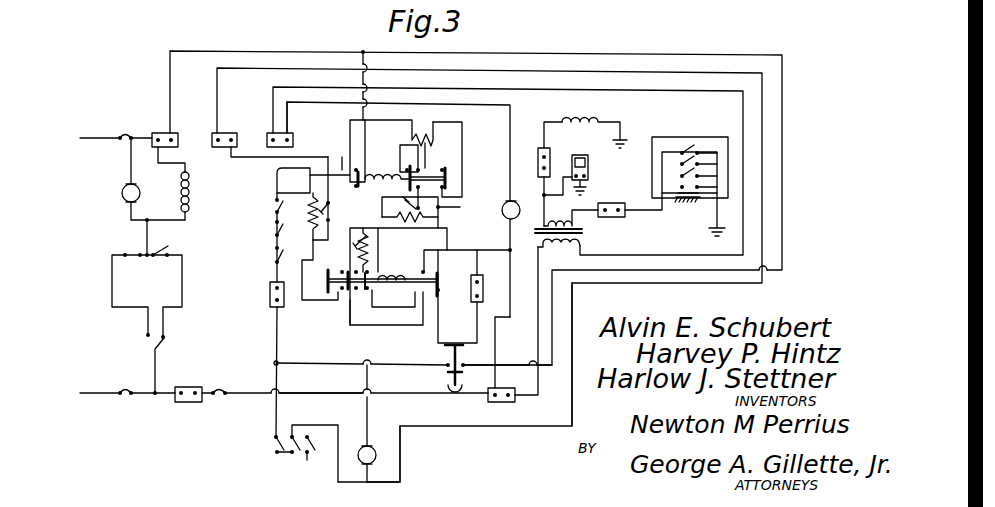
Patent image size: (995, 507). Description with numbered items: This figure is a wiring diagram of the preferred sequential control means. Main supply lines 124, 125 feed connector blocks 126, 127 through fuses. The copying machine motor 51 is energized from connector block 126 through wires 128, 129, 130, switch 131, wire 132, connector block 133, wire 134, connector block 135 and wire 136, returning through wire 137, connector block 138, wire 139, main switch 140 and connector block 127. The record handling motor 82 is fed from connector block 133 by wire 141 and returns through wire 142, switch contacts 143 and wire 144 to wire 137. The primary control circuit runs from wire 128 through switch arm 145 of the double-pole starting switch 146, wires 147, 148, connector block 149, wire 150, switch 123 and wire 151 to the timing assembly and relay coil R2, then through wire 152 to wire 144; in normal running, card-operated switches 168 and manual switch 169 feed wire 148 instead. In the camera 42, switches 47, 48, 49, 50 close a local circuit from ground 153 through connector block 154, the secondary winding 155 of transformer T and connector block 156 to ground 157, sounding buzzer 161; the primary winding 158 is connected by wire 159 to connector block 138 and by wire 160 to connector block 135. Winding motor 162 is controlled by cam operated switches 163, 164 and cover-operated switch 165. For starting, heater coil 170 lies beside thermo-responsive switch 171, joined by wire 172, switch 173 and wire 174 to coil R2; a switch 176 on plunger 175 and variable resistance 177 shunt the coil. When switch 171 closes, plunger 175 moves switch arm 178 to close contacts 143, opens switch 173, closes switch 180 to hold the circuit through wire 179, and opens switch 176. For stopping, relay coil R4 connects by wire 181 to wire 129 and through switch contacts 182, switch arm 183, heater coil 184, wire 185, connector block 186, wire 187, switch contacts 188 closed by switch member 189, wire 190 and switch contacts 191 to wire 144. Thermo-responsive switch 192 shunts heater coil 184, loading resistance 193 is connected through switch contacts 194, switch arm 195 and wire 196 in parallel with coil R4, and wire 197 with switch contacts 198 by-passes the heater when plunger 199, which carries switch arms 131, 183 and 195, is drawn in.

The camera 42 is at (712, 137).
The normally open switch 47 is at (684, 202).
The normally open switch 48 is at (680, 173).
The normally open switch 49 is at (680, 162).
The normally open switch 50 is at (680, 150).
The copying machine motor 51 is at (555, 228).
The motor of the record handling means 82 is at (372, 448).
The switch 123 is at (272, 210).
The main supply line 124 is at (96, 132).
The main supply line 125 is at (88, 400).
The connector block 126 is at (158, 132).
The connector block 127 is at (188, 404).
The wire 128 is at (273, 51).
The wire 129 is at (372, 75).
The wire 130 is at (356, 124).
The switch 131 is at (356, 166).
The wire 132 is at (260, 158).
The connector block 133 is at (214, 132).
The wire 134 is at (254, 132).
The connector block 135 is at (292, 137).
The wire 136 is at (470, 112).
The wire 137 is at (508, 284).
The connector block 138 is at (514, 400).
The wire 139 is at (342, 391).
The main switch 140 is at (218, 397).
The wire 141 is at (548, 53).
The wire 142 is at (362, 342).
The switch contacts 143 is at (422, 270).
The wire 144 is at (477, 250).
The switch arm 145 is at (451, 374).
The double-pole manually operable normally open switch 146 is at (459, 378).
The wire 147 is at (376, 366).
The wire 148 is at (274, 334).
The connector block 149 is at (269, 300).
The wire 150 is at (272, 278).
The wire 151 is at (293, 180).
The wire 152 is at (398, 276).
The ground 153 is at (613, 140).
The connector block 154 is at (540, 156).
The secondary winding 155 is at (540, 208).
The connector block 156 is at (614, 217).
The ground 157 is at (710, 232).
The primary winding 158 is at (559, 252).
The wire 159 is at (542, 346).
The wire 160 is at (662, 92).
The buzzer 161 is at (586, 175).
The winding motor 162 is at (121, 189).
The cam operated switch 163 is at (130, 252).
The cam operated switch 164 is at (166, 248).
The single pole double throw switch 165 is at (153, 345).
The card-operated switches 168 is at (300, 458).
The normally closed manually operable switch 169 is at (272, 452).
The heater coil 170 is at (311, 236).
The thermo-responsive switch 171 is at (310, 208).
The wire 172 is at (302, 286).
The switch 173 is at (330, 292).
The wire 174 is at (352, 292).
The plunger 175 is at (372, 306).
The switch 176 is at (366, 292).
The variable resistance 177 is at (370, 248).
The switch arm 178 is at (441, 290).
The wire 179 is at (330, 165).
The switch 180 is at (344, 292).
The wire 181 is at (365, 136).
The switch contacts 182 is at (406, 166).
The switch arm 183 is at (399, 122).
The heater coil 184 is at (384, 216).
The wire 185 is at (500, 222).
The connector block 186 is at (480, 280).
The wire 187 is at (480, 322).
The switch contacts 188 is at (448, 347).
The switch member 189 is at (458, 347).
The wire 190 is at (440, 325).
The switch contacts 191 is at (441, 278).
The thermo-responsive switch 192 is at (388, 196).
The loading resistance 193 is at (430, 140).
The switch contacts 194 is at (446, 168).
The switch arm 195 is at (448, 182).
The wire 196 is at (511, 118).
The wire 197 is at (460, 207).
The switch contacts 198 is at (426, 140).
The plunger 199 is at (448, 176).
The relay coil R2 is at (391, 293).
The relay coil R4 is at (387, 166).
The transformer T is at (565, 235).